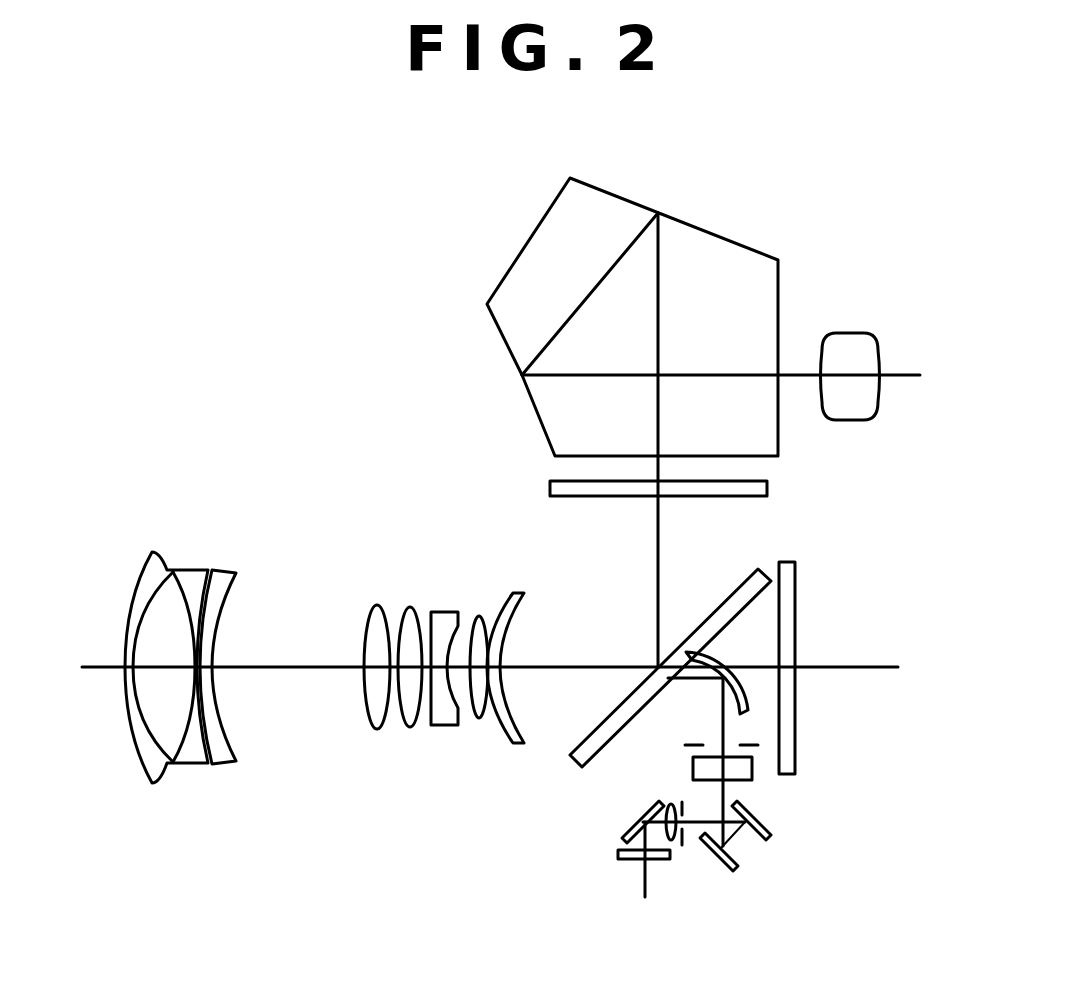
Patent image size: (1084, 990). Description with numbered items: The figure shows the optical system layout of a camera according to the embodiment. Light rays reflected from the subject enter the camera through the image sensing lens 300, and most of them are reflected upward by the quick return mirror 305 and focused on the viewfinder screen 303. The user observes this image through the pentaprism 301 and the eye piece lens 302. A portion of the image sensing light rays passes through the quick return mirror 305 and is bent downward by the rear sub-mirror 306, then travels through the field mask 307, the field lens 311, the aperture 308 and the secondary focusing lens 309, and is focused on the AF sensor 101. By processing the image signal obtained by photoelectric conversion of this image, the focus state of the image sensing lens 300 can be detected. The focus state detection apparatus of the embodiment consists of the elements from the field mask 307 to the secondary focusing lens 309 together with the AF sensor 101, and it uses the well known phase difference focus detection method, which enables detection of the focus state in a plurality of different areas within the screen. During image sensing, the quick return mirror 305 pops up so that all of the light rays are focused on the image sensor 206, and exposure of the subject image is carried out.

The AF sensor 101 is at (623, 860).
The image sensor 206 is at (795, 632).
The image sensing lens 300 is at (537, 545).
The pentaprism 301 is at (733, 242).
The eye piece lens 302 is at (848, 333).
The viewfinder screen 303 is at (767, 488).
The quick return mirror 305 is at (737, 588).
The rear sub-mirror 306 is at (744, 684).
The field mask 307 is at (758, 744).
The aperture 308 is at (695, 838).
The secondary focusing lens 309 is at (682, 840).
The field lens 311 is at (752, 772).